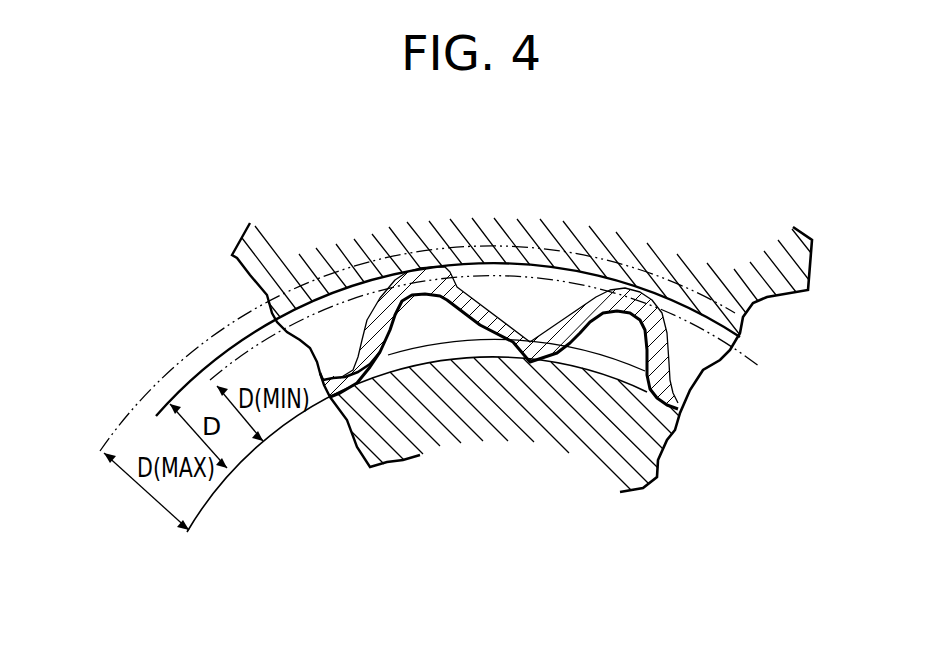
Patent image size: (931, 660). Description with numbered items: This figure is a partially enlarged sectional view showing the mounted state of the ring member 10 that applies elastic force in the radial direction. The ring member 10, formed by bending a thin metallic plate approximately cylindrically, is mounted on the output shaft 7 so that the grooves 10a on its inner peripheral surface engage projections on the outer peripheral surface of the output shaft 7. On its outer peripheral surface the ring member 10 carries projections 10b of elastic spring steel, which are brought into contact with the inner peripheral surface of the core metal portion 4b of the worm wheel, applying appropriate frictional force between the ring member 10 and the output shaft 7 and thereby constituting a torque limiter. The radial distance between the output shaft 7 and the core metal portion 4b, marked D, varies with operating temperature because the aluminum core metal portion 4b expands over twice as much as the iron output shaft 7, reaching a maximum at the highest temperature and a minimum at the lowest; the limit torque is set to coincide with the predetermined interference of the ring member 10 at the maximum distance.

The core metal portion 4b is at (568, 250).
The output shaft 7 is at (627, 459).
The ring member 10 is at (574, 377).
The grooves 10a is at (622, 348).
The projections 10b is at (670, 334).